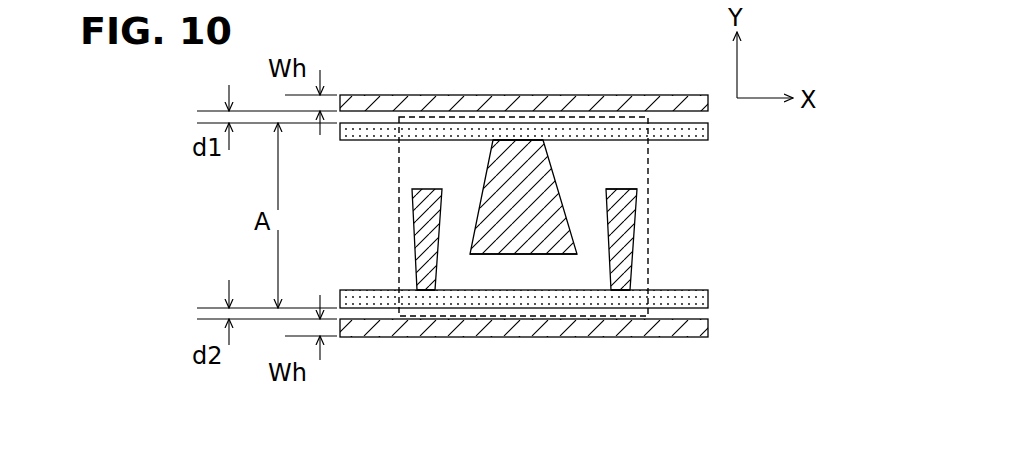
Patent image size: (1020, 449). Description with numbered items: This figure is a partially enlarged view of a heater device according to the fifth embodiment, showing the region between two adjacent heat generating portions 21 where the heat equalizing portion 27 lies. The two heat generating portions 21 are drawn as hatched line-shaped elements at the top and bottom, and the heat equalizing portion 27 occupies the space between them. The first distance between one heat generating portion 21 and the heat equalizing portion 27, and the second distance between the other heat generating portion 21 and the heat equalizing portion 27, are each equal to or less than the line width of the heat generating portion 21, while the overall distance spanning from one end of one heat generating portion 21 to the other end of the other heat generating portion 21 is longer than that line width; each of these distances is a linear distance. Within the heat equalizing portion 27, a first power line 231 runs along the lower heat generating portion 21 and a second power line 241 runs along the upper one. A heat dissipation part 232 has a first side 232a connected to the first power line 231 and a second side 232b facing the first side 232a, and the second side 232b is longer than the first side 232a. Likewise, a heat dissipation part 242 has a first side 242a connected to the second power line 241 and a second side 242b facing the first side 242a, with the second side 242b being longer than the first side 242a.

The heat generating portion 21 is at (500, 95).
The heat equalizing portion 27 is at (437, 95).
The second power line 241 is at (688, 140).
The heat dissipation part 242 is at (565, 168).
The first side 242a is at (545, 140).
The second side 242b is at (527, 254).
The first power line 231 is at (673, 290).
The heat dissipation part 232 is at (633, 237).
The first side 232a is at (437, 294).
The second side 232b is at (625, 189).